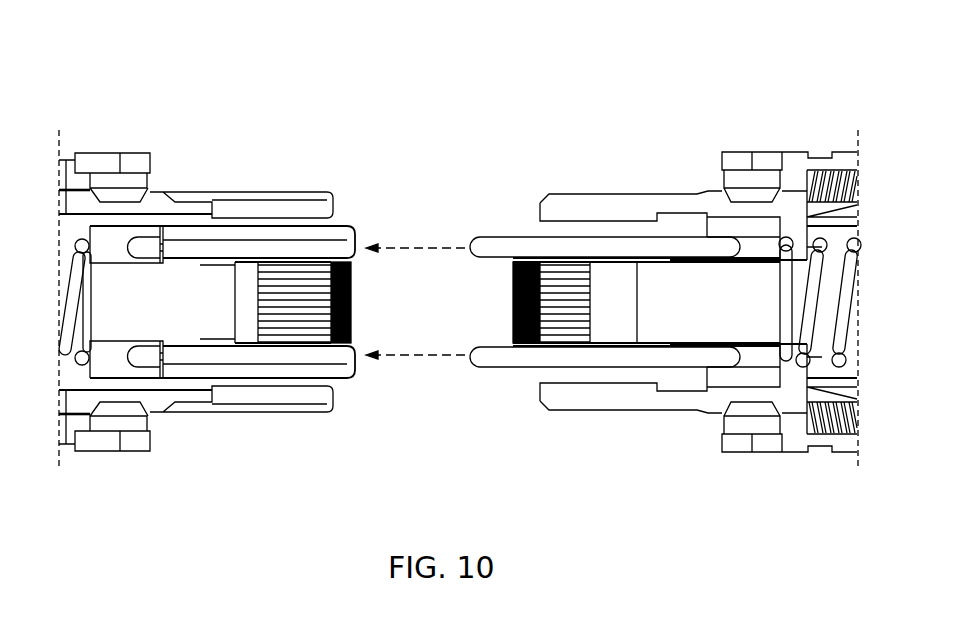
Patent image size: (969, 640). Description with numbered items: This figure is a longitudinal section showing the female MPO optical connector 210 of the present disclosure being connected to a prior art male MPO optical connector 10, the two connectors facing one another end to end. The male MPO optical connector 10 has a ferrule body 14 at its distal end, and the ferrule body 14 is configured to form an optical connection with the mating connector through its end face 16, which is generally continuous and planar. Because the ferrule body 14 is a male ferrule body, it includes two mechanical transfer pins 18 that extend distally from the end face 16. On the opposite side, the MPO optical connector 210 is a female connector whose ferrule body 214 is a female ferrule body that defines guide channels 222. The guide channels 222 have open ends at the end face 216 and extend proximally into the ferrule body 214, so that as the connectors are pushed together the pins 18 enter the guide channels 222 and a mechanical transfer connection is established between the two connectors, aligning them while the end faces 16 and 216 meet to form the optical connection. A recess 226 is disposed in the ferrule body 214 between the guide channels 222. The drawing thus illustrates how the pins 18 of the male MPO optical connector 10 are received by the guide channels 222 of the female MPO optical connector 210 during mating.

The male MPO optical connector 10 is at (777, 84).
The ferrule body 14 is at (577, 399).
The end face 16 is at (496, 282).
The mechanical transfer pins 18 is at (497, 237).
The MPO optical connector 210 is at (213, 97).
The ferrule body 214 is at (357, 204).
The end face 216 is at (375, 362).
The guide channels 222 is at (270, 250).
The recess 226 is at (370, 320).